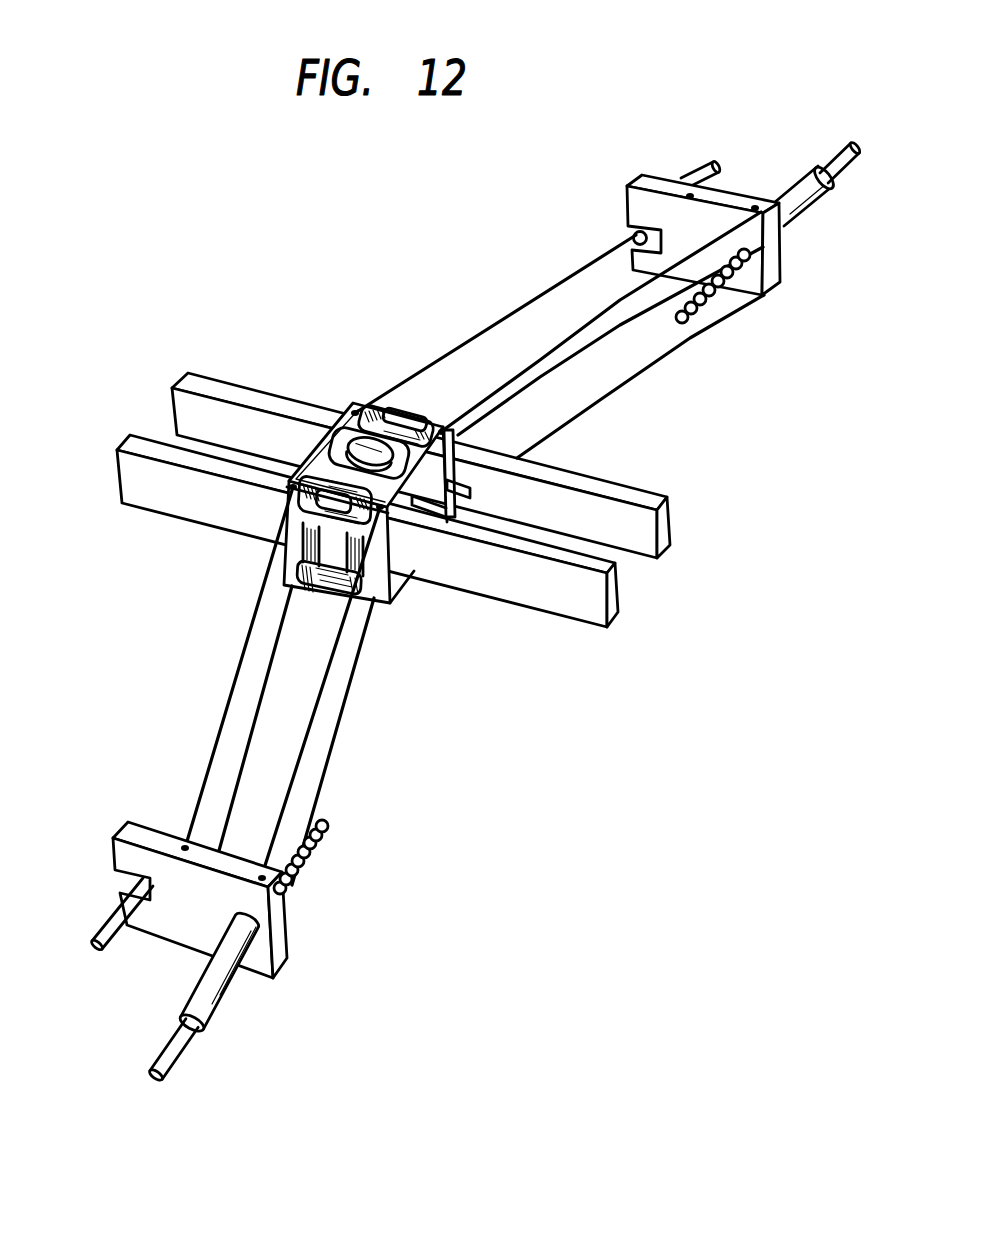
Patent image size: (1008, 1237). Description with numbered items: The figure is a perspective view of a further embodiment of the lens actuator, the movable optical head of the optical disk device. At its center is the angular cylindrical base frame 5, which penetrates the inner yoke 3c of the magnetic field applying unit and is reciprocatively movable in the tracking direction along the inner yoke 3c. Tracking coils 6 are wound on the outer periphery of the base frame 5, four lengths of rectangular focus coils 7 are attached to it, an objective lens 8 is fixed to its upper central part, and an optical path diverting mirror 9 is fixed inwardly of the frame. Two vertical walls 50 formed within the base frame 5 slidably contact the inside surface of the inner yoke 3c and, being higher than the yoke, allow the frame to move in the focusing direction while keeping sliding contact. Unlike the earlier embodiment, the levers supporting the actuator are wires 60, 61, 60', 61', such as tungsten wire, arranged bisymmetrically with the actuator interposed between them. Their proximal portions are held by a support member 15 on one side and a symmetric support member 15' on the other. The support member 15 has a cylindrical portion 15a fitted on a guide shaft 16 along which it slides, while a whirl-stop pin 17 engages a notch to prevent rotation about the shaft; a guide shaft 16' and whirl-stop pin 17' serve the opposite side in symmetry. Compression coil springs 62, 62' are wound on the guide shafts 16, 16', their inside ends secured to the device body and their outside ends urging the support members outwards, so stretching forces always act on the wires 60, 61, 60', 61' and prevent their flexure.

The inner yoke 3c is at (648, 530).
The base frame 5 is at (358, 410).
The tracking coils 6 is at (288, 476).
The focus coils 7 is at (442, 428).
The objective lens 8 is at (330, 437).
The optical path diverting mirror 9 is at (455, 490).
The wall 50 is at (455, 488).
The wire 60 is at (338, 696).
The wire 60' is at (611, 352).
The wire 61 is at (227, 672).
The wire 61' is at (558, 321).
The compression coil spring 62 is at (320, 861).
The compression coil spring 62' is at (733, 302).
The support member 15 is at (235, 900).
The support member 15' is at (737, 235).
The cylindrical portion 15a is at (220, 1007).
The guide shaft 16 is at (192, 1057).
The guide shaft 16' is at (838, 183).
The whirl-stop pin 17 is at (100, 914).
The whirl-stop pin 17' is at (684, 155).